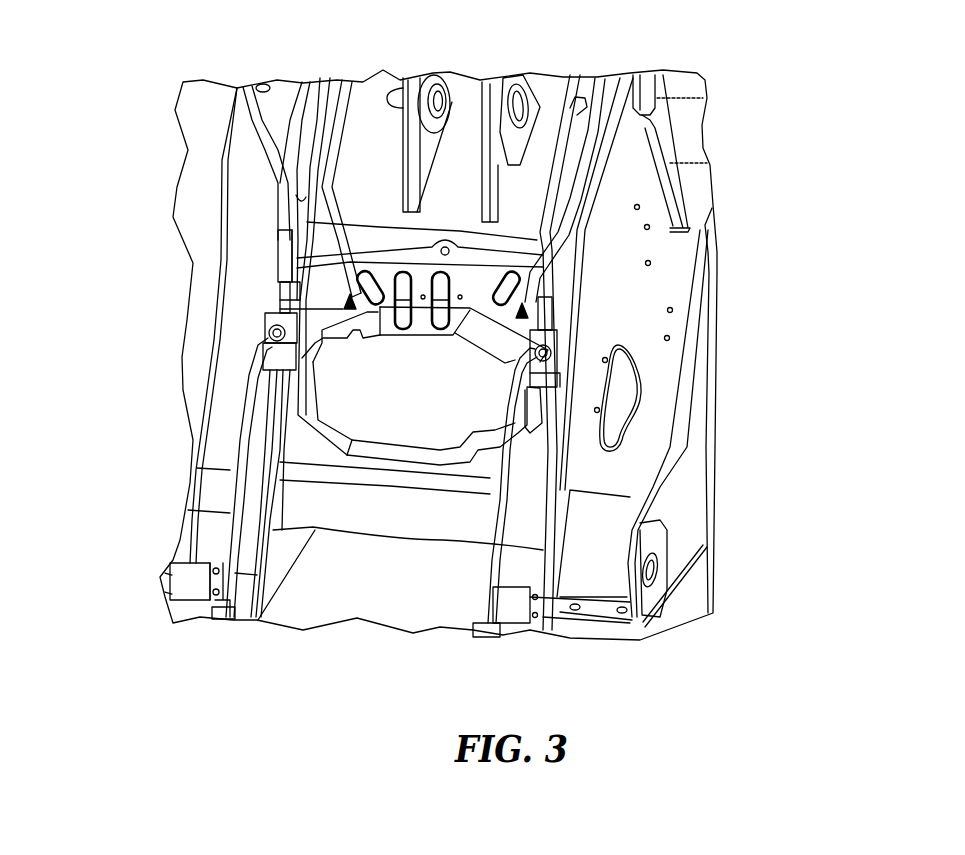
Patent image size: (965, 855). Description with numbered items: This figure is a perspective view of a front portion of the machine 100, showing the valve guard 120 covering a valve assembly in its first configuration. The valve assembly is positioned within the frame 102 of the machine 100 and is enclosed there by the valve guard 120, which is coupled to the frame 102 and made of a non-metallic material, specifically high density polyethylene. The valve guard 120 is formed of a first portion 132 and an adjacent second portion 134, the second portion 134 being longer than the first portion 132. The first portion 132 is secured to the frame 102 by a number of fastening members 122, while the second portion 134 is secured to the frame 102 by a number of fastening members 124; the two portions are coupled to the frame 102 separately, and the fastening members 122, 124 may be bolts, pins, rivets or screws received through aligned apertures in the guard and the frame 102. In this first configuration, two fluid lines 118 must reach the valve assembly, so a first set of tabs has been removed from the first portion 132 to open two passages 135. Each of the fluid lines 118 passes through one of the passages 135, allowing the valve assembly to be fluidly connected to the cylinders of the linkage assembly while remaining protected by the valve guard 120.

The machine 100 is at (863, 103).
The frame 102 is at (663, 257).
The fluid lines 118 is at (350, 103).
The valve guard 120 is at (473, 282).
The fastening members 122 is at (317, 287).
The fastening members 124 is at (298, 452).
The first portion 132 is at (313, 263).
The second portion 134 is at (297, 345).
The passages 135 is at (307, 322).